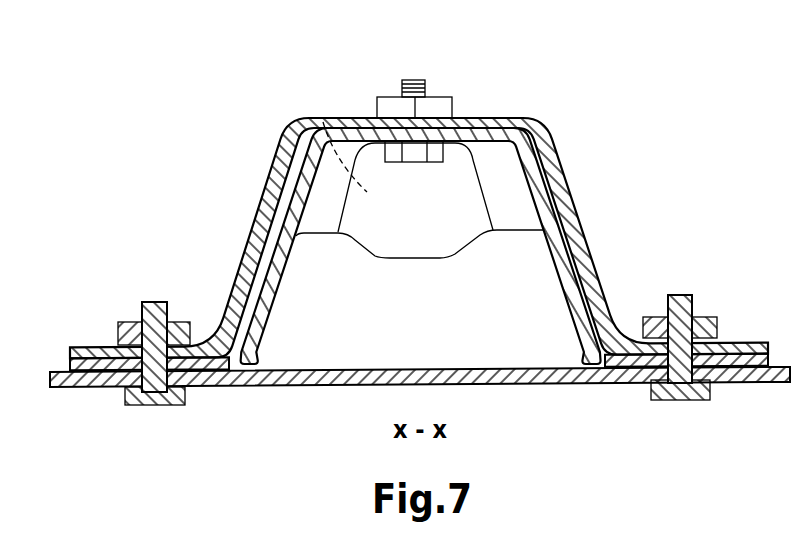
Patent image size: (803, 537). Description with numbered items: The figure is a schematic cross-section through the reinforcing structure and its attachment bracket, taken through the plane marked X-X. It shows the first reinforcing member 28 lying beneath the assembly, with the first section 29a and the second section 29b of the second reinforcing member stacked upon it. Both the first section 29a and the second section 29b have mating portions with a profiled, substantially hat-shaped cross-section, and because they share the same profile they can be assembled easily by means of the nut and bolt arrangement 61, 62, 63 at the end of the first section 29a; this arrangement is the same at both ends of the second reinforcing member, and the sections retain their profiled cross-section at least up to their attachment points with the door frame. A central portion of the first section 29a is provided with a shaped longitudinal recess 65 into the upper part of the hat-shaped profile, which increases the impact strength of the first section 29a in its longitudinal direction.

The first reinforcing member 28 is at (293, 378).
The first section 29a is at (533, 205).
The second section 29b is at (578, 240).
The nut and bolt arrangement 61 is at (688, 305).
The nut and bolt arrangement 62 is at (427, 84).
The nut and bolt arrangement 63 is at (155, 302).
The shaped longitudinal recess 65 is at (323, 122).